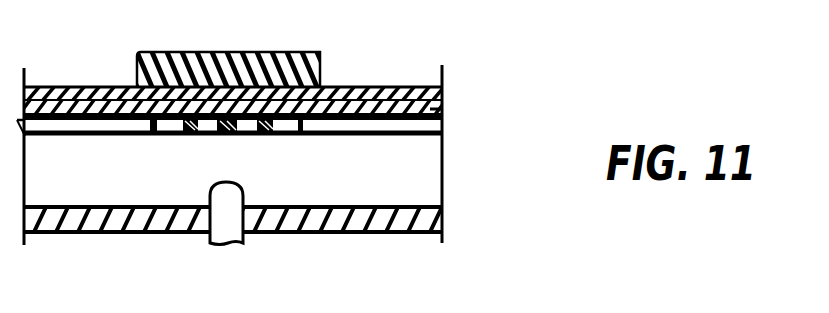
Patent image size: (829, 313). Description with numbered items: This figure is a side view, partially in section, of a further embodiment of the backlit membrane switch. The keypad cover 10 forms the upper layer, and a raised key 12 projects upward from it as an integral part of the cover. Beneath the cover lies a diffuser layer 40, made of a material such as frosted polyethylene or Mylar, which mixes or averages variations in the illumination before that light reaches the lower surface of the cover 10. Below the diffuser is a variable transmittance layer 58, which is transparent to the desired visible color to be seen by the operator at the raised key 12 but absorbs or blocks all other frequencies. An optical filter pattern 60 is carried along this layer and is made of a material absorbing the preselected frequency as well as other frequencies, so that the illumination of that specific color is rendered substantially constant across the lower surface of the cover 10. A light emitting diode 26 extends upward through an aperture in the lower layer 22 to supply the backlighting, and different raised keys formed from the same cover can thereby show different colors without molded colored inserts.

The keypad cover 10 is at (367, 83).
The raised key 12 is at (237, 52).
The lower wall 22 is at (397, 233).
The light emitting diode 26 is at (213, 247).
The diffuser layer 40 is at (433, 108).
The variable transmittance layer 58 is at (423, 127).
The optical filter pattern 60 is at (158, 136).